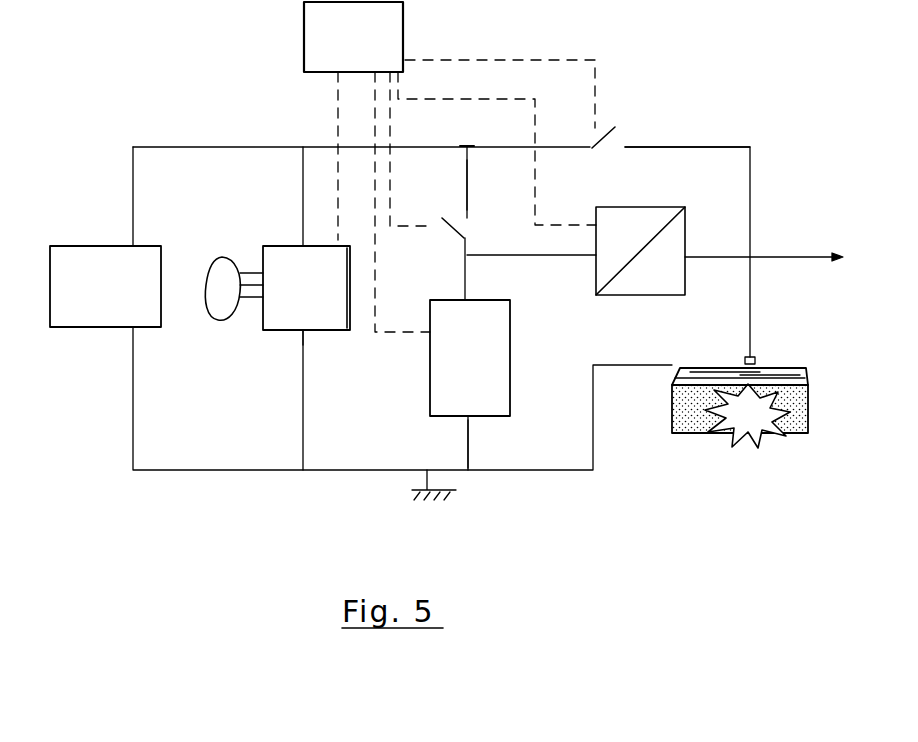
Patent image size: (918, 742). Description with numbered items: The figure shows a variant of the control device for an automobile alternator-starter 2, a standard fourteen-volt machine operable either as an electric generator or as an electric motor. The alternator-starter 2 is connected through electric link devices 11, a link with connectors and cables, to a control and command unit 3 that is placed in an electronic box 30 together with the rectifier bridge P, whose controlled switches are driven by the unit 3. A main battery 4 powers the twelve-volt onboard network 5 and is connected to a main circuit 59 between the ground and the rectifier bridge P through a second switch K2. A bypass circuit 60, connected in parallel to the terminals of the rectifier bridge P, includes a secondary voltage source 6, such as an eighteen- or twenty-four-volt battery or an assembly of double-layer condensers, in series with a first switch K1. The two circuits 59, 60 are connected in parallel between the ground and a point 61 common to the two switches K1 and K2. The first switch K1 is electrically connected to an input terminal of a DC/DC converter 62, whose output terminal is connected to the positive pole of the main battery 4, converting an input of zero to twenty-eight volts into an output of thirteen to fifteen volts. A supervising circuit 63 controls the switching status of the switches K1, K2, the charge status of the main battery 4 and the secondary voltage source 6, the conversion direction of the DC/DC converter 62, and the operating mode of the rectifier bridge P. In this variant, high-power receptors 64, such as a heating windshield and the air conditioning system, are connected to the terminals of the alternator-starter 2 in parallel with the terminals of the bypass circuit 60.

The alternator-starter 2 is at (203, 318).
The control and command unit 3 is at (282, 253).
The rectifier bridge P is at (335, 258).
The electric link devices 11 is at (248, 302).
The electronic box 30 is at (280, 335).
The main battery 4 is at (690, 435).
The onboard network 5 is at (764, 249).
The secondary voltage source 6 is at (470, 358).
The main circuit 59 is at (672, 147).
The bypass circuit 60 is at (468, 190).
The common point 61 is at (466, 148).
The DC/DC converter 62 is at (655, 296).
The supervising circuit 63 is at (353, 37).
The high-power receptors 64 is at (105, 286).
The first switch K1 is at (467, 228).
The second switch K2 is at (604, 151).